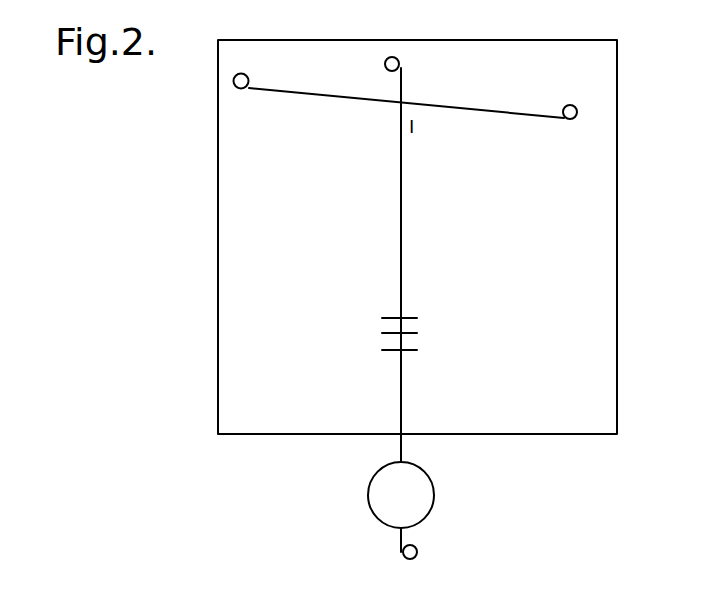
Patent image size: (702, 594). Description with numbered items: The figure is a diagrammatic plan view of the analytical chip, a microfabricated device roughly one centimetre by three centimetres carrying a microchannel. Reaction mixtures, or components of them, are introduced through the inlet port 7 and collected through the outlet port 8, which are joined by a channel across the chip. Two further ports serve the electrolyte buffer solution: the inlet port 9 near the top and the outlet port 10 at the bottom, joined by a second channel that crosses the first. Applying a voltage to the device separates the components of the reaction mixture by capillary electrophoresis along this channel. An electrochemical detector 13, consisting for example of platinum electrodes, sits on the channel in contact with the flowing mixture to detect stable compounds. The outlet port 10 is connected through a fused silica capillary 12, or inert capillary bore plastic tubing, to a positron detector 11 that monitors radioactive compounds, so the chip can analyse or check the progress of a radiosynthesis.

The inlet port 7 is at (234, 76).
The outlet port 8 is at (577, 108).
The electrolyte buffer inlet port 9 is at (385, 59).
The electrolyte buffer outlet port 10 is at (403, 551).
The positron detector 11 is at (390, 503).
The fused silica capillary 12 is at (403, 447).
The electrochemical detector 13 is at (388, 317).